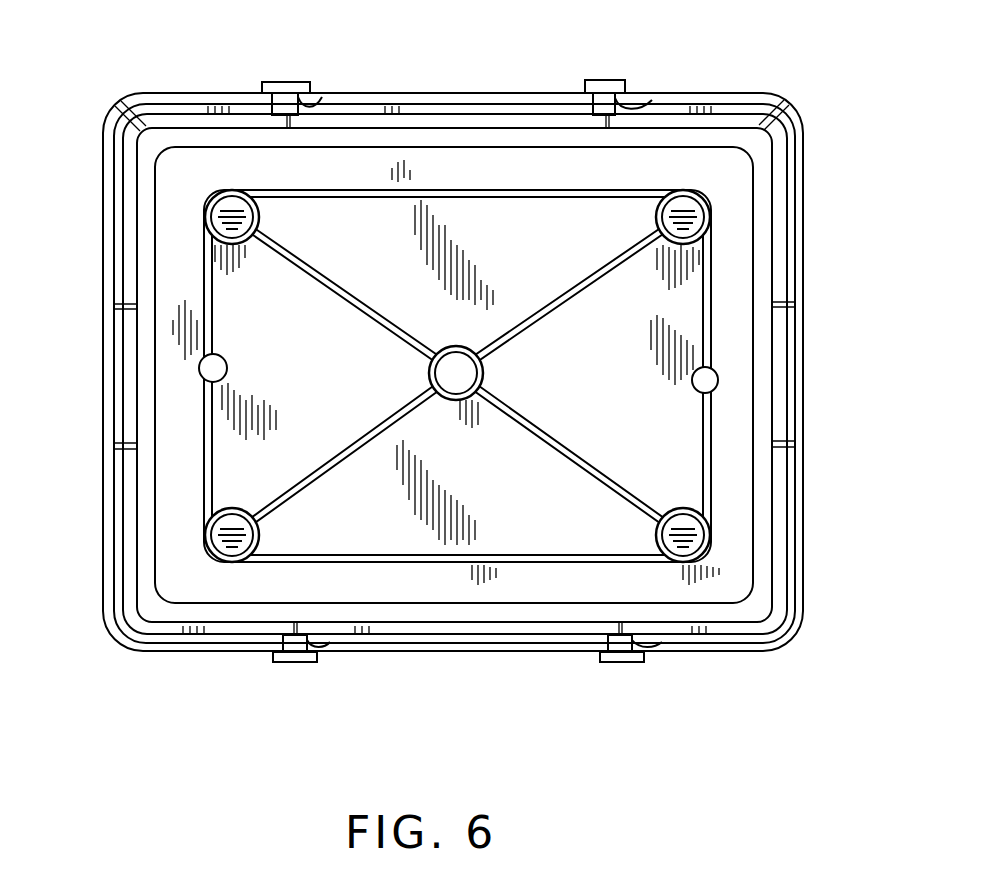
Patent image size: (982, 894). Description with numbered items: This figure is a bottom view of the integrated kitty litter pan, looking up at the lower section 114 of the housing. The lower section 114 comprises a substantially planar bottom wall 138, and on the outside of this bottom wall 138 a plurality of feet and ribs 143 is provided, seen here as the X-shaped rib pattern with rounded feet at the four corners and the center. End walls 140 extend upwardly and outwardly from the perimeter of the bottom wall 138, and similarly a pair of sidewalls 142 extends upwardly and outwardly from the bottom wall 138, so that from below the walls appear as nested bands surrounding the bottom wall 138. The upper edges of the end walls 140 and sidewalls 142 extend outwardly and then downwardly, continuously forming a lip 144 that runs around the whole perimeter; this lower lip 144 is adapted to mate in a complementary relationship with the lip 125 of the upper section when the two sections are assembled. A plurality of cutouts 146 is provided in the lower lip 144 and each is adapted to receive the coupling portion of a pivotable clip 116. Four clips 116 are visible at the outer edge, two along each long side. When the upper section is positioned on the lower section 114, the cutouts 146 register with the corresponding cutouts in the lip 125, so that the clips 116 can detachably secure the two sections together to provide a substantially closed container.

The lower section 114 is at (822, 346).
The pivotable clip 116 is at (289, 81).
The lip 125 is at (103, 317).
The bottom wall 138 is at (608, 422).
The end wall 140 is at (150, 492).
The sidewall 142 is at (530, 145).
The feet and ribs 143 is at (298, 262).
The lip 144 is at (430, 114).
The cutout 146 is at (316, 96).